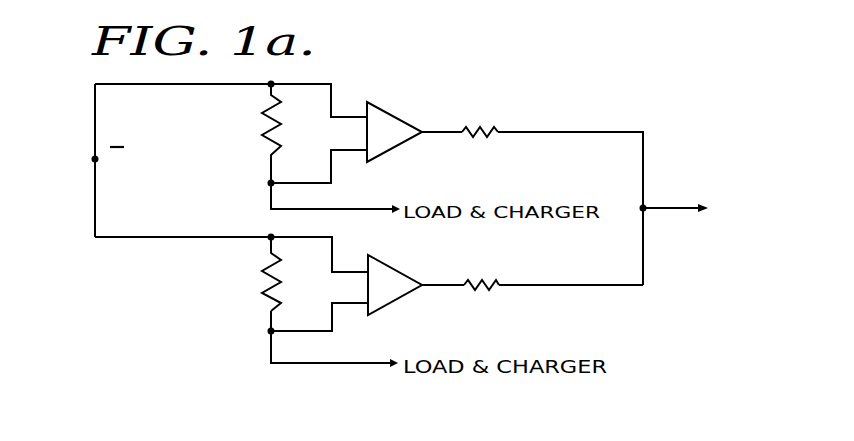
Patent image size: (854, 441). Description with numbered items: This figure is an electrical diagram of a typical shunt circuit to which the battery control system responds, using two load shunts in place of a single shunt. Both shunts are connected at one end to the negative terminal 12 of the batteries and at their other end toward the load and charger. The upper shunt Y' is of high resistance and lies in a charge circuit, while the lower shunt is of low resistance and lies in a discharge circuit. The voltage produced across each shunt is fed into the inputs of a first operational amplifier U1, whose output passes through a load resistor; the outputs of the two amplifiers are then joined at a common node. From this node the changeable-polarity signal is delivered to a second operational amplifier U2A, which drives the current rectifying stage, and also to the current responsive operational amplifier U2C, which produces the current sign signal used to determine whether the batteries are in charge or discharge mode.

The negative terminal 12 is at (88, 160).
The load shunt Y' is at (234, 122).
The first operational amplifier U1 is at (394, 208).
The second operational amplifier U2A is at (694, 200).
The current responsive operational amplifier U2C is at (695, 216).